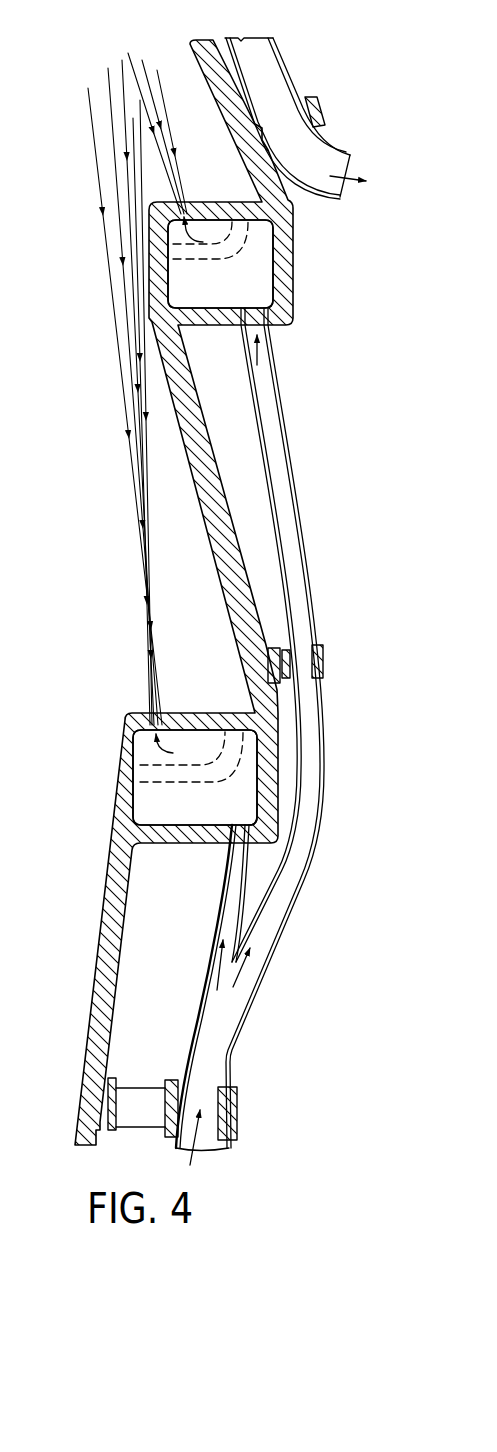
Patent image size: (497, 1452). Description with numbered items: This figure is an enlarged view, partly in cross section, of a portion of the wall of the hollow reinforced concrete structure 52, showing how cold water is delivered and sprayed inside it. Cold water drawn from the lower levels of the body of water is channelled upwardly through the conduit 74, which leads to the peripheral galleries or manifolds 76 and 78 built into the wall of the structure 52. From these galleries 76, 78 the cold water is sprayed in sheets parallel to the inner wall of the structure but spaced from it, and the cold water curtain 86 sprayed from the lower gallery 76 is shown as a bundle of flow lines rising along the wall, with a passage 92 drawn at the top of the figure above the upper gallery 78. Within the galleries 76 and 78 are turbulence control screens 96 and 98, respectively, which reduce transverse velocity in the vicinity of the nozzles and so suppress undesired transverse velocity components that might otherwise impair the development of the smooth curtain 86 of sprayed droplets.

The hollow reinforced concrete structure 52 is at (227, 92).
The conduit 74 is at (222, 1040).
The gallery 76 is at (262, 743).
The gallery 78 is at (282, 290).
The cold water curtain 86 is at (141, 490).
The exhaust passage 92 is at (243, 42).
The turbulence control screen 96 is at (214, 783).
The turbulence control screen 98 is at (252, 242).